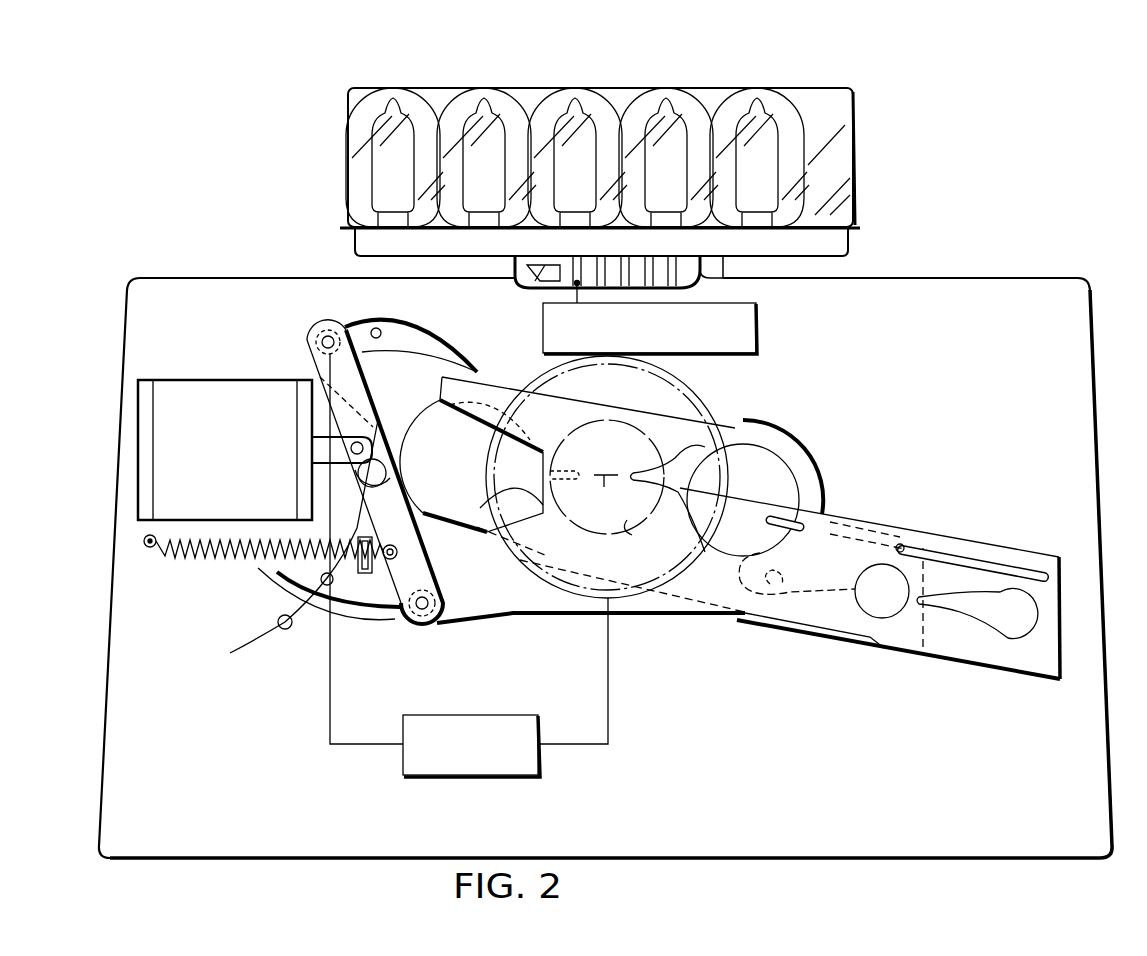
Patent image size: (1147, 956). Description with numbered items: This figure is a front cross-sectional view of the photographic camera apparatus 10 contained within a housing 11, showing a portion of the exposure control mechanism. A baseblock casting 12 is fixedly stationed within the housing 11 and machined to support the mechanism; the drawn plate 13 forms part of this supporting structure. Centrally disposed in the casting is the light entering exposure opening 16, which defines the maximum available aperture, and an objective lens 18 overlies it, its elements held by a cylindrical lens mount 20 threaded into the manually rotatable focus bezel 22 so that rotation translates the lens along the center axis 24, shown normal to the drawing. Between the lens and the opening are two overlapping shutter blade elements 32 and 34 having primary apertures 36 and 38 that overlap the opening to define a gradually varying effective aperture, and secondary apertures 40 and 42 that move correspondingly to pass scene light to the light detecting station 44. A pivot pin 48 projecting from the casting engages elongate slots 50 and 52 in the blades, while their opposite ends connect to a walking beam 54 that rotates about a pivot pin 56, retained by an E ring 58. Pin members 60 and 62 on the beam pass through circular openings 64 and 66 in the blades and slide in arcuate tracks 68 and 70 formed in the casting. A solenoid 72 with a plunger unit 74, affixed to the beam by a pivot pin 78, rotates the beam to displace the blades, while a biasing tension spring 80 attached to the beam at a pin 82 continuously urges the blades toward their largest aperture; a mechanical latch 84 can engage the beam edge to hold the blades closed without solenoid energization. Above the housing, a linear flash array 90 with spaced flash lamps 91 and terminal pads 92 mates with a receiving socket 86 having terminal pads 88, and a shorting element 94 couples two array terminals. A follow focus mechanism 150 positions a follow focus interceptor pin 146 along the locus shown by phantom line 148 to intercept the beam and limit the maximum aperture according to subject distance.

The photographic camera apparatus 10 is at (1030, 258).
The housing 11 is at (1092, 367).
The baseblock casting 12 is at (842, 422).
The shutter blade plate 13 is at (745, 413).
The light entering exposure opening 16 is at (634, 522).
The objective lens 18 is at (620, 453).
The cylindrical lens mount 20 is at (688, 398).
The focus bezel 22 is at (720, 460).
The center axis 24 is at (585, 490).
The shutter blade element 32 is at (418, 358).
The shutter blade element 34 is at (663, 614).
The primary aperture 36 is at (410, 445).
The primary aperture 38 is at (715, 500).
The photocell sweep secondary aperture 40 is at (790, 584).
The photocell sweep secondary aperture 42 is at (1012, 637).
The light detecting station 44 is at (887, 607).
The pivot pin 48 is at (902, 540).
The elongate slot 50 is at (852, 536).
The elongate slot 52 is at (992, 558).
The walking beam 54 is at (440, 565).
The pivot pin 56 is at (381, 458).
The E ring 58 is at (388, 466).
The pin member 60 is at (318, 338).
The pin member 62 is at (420, 612).
The circular opening 64 is at (326, 334).
The circular opening 66 is at (436, 600).
The arcuate track 68 is at (377, 328).
The arcuate track 70 is at (362, 606).
The solenoid 72 is at (183, 378).
The plunger unit 74 is at (344, 475).
The pivot pin 78 is at (352, 441).
The biasing tension spring 80 is at (210, 555).
The pin 82 is at (389, 545).
The mechanical latch 84 is at (363, 574).
The receiving socket 86 is at (686, 260).
The terminal pads 88 is at (645, 286).
The linear flash array 90 is at (856, 147).
The flash lamps 91 is at (748, 92).
The terminal pads 92 is at (660, 263).
The shorting element 94 is at (548, 283).
The follow focus interceptor pin 146 is at (276, 569).
The phantom line 148 is at (293, 628).
The follow focus mechanism 150 is at (463, 776).